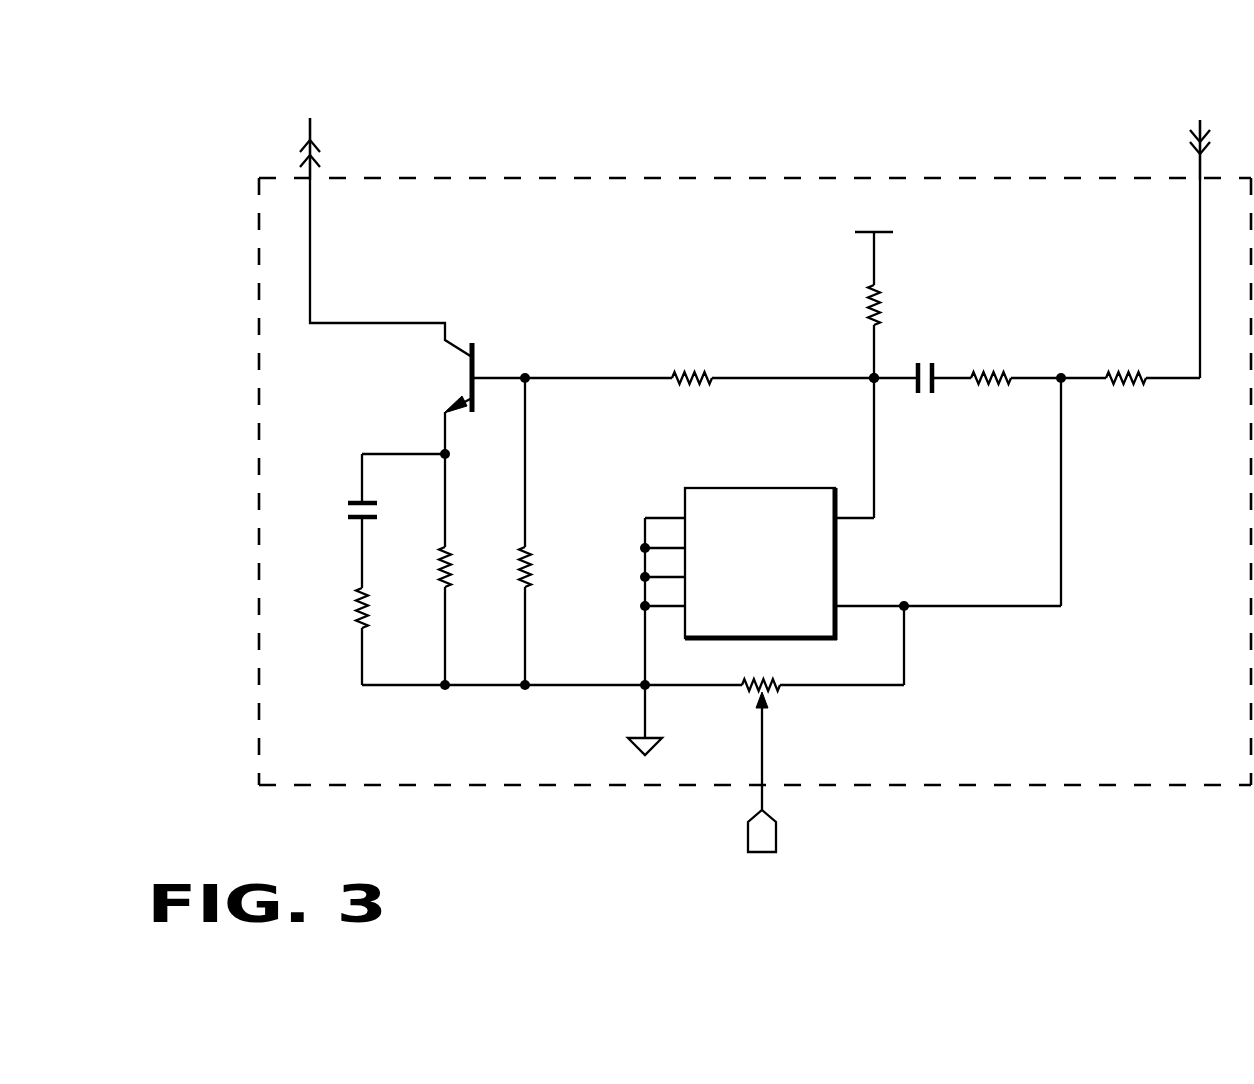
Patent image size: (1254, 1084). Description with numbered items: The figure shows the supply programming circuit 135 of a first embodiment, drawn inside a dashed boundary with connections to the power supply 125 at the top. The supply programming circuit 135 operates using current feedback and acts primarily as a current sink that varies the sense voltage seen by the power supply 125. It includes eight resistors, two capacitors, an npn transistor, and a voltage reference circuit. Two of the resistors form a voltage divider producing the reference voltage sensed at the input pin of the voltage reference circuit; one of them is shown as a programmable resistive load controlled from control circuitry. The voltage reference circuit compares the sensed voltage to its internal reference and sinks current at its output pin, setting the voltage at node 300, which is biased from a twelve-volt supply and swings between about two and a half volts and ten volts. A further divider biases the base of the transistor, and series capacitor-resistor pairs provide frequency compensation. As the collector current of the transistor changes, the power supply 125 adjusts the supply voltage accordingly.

The power supply 125 is at (755, 127).
The supply programming circuit 135 is at (1235, 781).
The node 300 is at (869, 370).